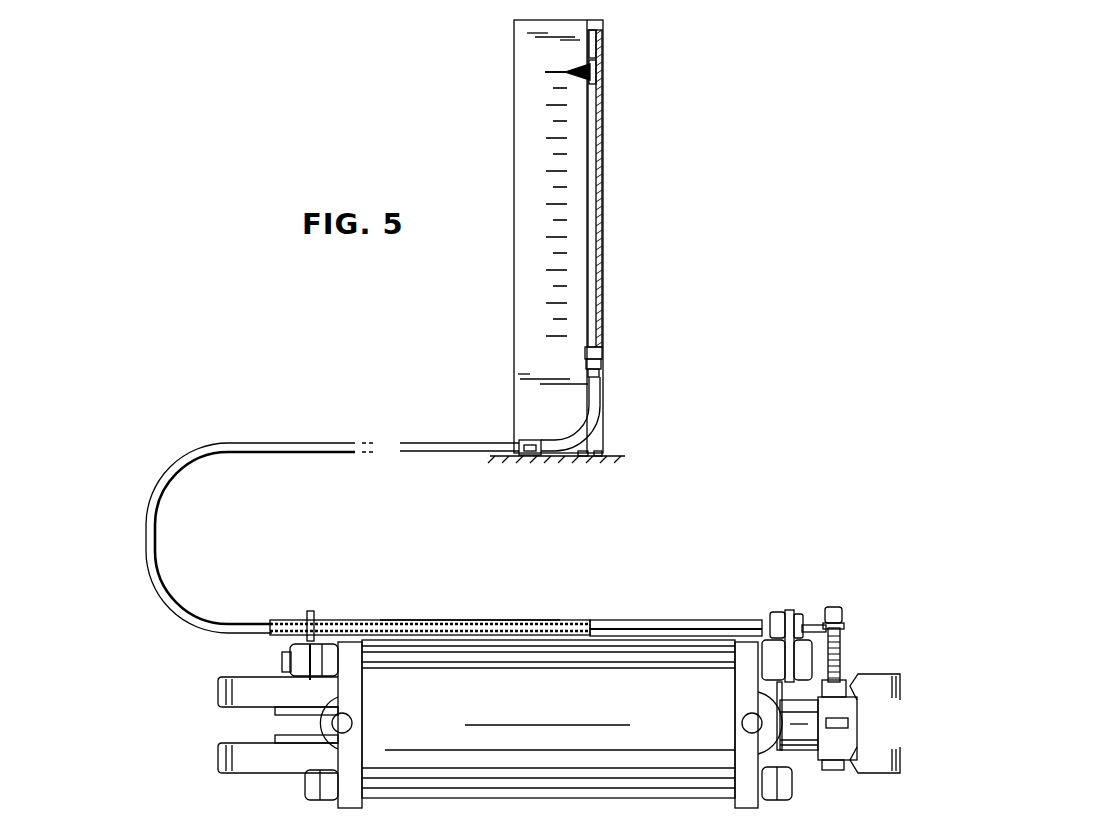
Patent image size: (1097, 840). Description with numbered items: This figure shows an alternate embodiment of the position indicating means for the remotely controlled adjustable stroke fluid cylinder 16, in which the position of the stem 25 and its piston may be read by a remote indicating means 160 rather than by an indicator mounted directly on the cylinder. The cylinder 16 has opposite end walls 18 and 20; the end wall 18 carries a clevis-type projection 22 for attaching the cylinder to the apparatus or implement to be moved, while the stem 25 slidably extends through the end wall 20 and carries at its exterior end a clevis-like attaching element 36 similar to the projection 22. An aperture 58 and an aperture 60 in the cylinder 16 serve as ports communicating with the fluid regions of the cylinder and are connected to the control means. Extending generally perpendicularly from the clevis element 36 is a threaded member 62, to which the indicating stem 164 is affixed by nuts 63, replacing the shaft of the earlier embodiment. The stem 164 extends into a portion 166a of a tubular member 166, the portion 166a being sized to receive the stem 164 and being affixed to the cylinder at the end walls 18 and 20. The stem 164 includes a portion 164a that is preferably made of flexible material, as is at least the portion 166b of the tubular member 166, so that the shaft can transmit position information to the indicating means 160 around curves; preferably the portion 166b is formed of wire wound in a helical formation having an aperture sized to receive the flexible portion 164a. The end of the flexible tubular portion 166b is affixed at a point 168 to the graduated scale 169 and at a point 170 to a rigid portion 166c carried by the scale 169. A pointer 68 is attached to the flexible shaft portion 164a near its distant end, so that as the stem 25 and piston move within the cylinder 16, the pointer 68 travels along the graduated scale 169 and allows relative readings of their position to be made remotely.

The fluid cylinder 16 is at (518, 804).
The end wall 18 is at (346, 808).
The end wall 20 is at (748, 808).
The clevis-type projection 22 is at (228, 776).
The stem 25 is at (802, 752).
The clevis-like attaching element 36 is at (878, 775).
The aperture 58 is at (352, 722).
The aperture 60 is at (742, 723).
The threaded member 62 is at (840, 666).
The nuts 63 is at (844, 626).
The pointer 68 is at (587, 68).
The remote indicating means 160 is at (652, 417).
The stem 164 is at (490, 620).
The flexible portion of shaft 164a is at (600, 300).
The tubular member 166 is at (722, 620).
The portion of tubular member 166a is at (658, 626).
The flexible portion of tubular member 166b is at (260, 455).
The rigid portion 166c is at (603, 222).
The attachment point 168 is at (522, 441).
The graduated scale 169 is at (513, 271).
The attachment point 170 is at (601, 370).